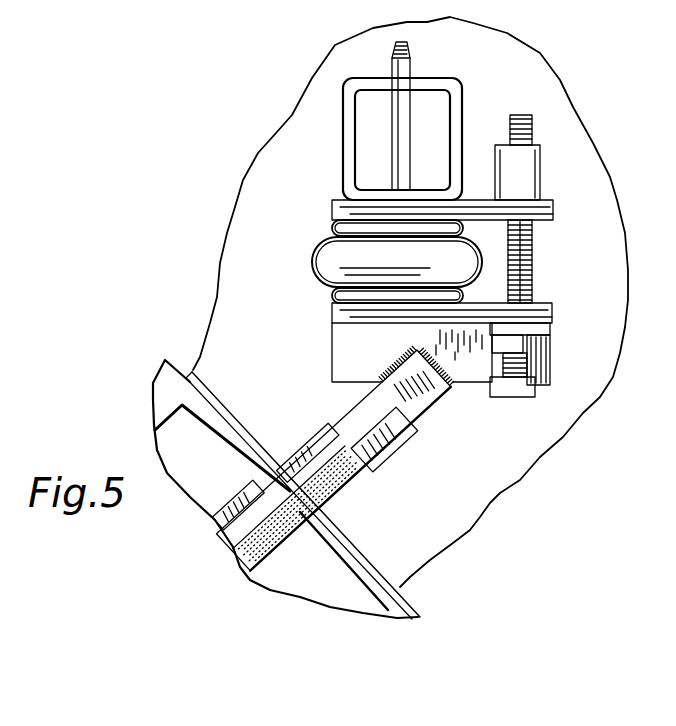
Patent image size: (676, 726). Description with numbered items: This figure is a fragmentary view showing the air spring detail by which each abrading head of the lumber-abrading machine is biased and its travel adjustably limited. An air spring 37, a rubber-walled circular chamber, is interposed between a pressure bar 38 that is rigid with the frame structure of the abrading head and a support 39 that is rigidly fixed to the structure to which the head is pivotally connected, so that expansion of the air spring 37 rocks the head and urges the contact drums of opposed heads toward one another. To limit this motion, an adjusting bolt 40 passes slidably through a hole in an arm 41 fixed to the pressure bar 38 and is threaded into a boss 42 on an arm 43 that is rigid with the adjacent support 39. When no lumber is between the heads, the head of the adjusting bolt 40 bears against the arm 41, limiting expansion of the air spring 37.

The air spring 37 is at (323, 257).
The pressure bar 38 is at (350, 338).
The support 39 is at (455, 102).
The adjusting bolt 40 is at (527, 368).
The arm 41 is at (553, 320).
The boss 42 is at (553, 212).
The arm 43 is at (340, 212).